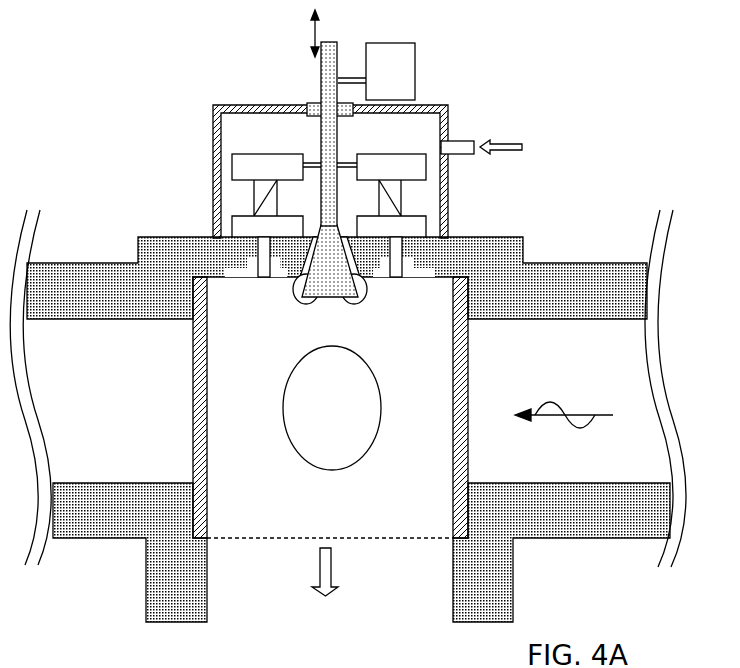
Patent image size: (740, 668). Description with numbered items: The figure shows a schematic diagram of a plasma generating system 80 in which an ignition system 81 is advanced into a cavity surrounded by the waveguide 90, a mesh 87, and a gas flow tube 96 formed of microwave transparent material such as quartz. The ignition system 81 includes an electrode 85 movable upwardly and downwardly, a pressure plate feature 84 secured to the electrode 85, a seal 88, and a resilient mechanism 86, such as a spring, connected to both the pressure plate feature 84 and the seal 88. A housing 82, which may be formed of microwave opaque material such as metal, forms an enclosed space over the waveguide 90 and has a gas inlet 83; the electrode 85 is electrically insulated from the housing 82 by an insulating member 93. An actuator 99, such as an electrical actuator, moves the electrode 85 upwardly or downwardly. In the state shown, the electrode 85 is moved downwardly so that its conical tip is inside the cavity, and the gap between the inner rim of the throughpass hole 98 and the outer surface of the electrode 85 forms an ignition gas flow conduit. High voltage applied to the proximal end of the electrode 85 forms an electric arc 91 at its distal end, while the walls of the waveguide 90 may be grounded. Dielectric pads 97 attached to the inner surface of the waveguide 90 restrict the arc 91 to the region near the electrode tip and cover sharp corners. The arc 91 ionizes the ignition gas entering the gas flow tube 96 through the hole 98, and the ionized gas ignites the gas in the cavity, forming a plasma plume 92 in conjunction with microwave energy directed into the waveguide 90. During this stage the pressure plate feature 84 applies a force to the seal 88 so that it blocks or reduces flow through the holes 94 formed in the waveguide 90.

The plasma generating system 80 is at (86, 58).
The ignition system 81 is at (317, 81).
The housing 82 is at (213, 128).
The gas inlet 83 is at (462, 141).
The pressure plate feature 84 is at (232, 165).
The electrode 85 is at (340, 47).
The resilient mechanism 86 is at (254, 195).
The mesh 87 is at (292, 538).
The seal 88 is at (232, 222).
The waveguide 90 is at (138, 237).
The electric arc 91 is at (303, 305).
The plasma plume 92 is at (283, 416).
The insulating member 93 is at (350, 116).
The holes 94 is at (263, 278).
The gas flow tube 96 is at (193, 378).
The dielectric pads 97 is at (233, 278).
The throughpass hole 98 is at (340, 237).
The actuator 99 is at (416, 88).